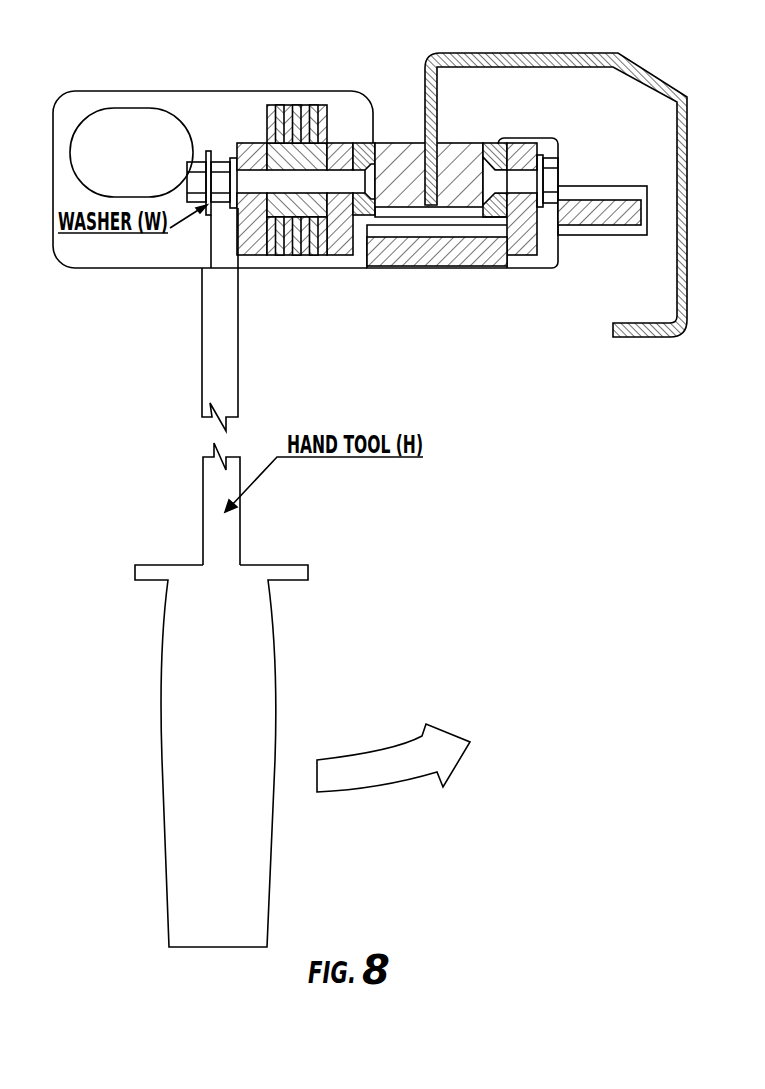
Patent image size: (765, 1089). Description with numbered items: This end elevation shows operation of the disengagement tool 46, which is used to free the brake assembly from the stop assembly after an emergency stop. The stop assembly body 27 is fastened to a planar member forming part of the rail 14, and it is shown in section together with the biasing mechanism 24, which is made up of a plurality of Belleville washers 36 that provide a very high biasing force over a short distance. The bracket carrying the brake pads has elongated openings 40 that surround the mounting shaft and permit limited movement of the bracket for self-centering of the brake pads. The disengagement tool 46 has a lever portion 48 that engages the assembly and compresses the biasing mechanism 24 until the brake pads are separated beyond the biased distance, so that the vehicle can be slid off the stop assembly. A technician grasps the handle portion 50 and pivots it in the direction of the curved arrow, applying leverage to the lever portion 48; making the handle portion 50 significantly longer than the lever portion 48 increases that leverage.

The rail 14 is at (523, 53).
The biasing mechanism 24 is at (268, 108).
The body 27 is at (395, 141).
The Belleville washers 36 is at (317, 256).
The openings 40 is at (120, 118).
The disengagement tool 46 is at (193, 489).
The lever portion 48 is at (215, 243).
The handle portion 50 is at (241, 532).